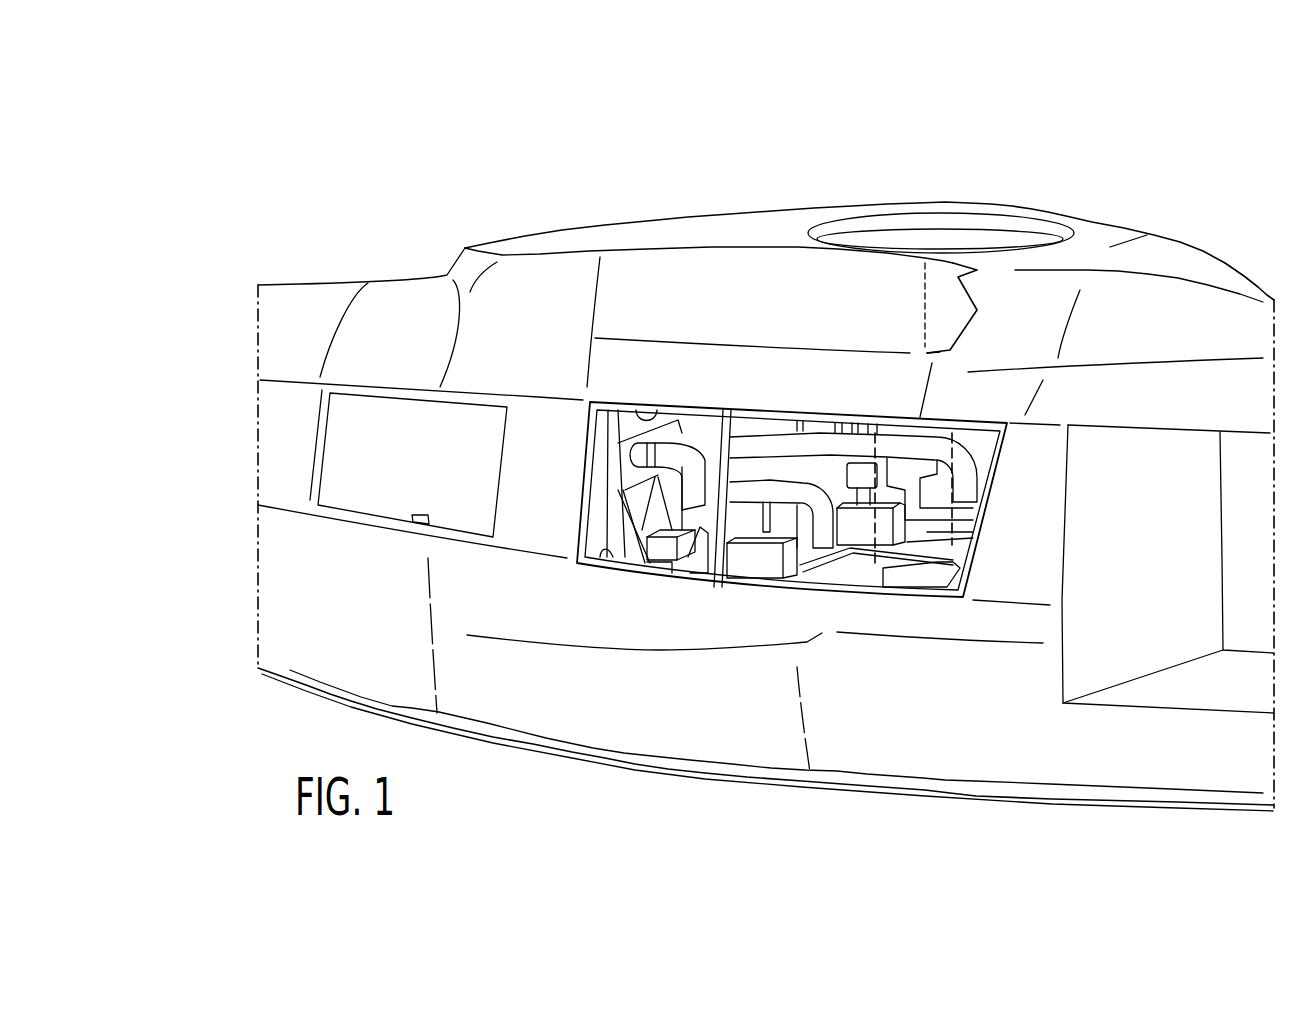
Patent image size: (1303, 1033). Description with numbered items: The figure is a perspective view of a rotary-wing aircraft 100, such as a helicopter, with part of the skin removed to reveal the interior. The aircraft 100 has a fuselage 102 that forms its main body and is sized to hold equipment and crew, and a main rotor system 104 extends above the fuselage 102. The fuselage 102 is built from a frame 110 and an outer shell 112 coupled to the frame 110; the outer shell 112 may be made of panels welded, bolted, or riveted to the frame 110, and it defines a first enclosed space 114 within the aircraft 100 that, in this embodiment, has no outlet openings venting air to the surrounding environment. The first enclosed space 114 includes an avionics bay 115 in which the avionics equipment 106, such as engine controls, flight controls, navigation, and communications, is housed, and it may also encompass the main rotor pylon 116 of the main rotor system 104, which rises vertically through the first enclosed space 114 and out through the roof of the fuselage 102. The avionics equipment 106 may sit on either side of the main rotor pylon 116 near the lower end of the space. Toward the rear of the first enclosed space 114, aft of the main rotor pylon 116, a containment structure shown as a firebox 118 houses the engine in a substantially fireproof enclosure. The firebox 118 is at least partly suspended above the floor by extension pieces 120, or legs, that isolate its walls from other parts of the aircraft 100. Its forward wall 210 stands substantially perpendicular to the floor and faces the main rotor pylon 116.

The aircraft 100 is at (288, 118).
The fuselage 102 is at (868, 203).
The main rotor system 104 is at (946, 238).
The avionics equipment 106 is at (830, 580).
The frame 110 is at (708, 445).
The outer shell 112 is at (417, 458).
The first enclosed space 114 is at (776, 419).
The avionics bay 115 is at (797, 592).
The main rotor pylon 116 is at (966, 514).
The firebox 118 is at (601, 466).
The extension pieces 120 is at (630, 533).
The forward wall 210 is at (627, 417).